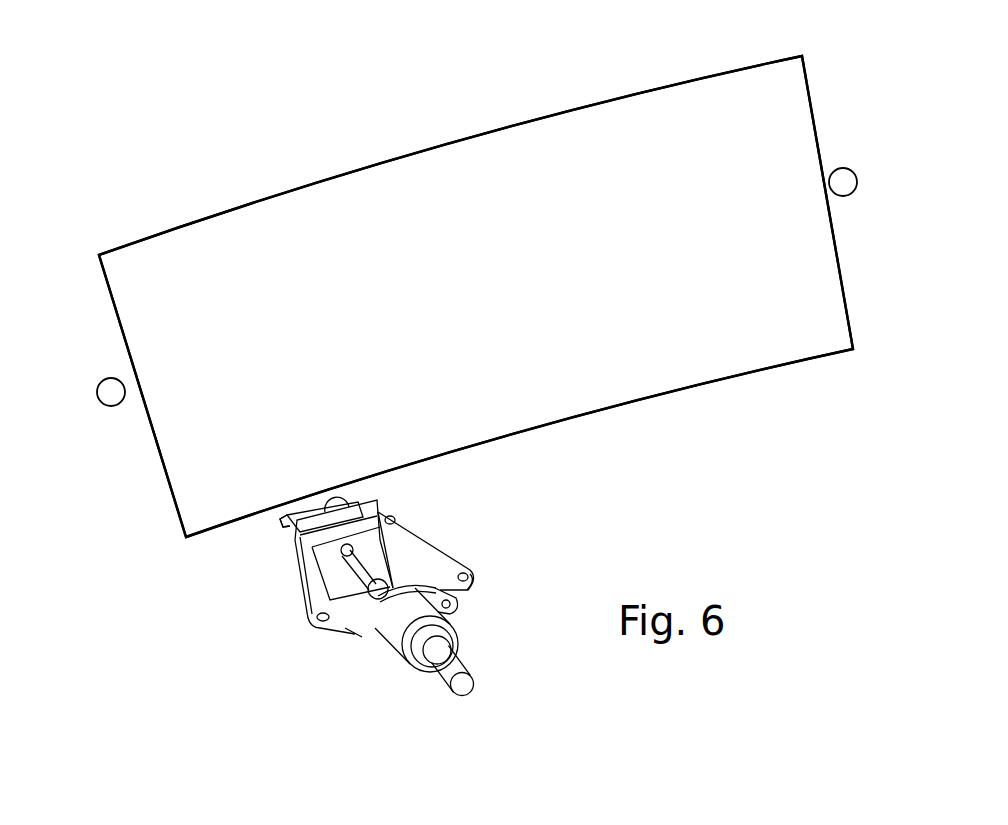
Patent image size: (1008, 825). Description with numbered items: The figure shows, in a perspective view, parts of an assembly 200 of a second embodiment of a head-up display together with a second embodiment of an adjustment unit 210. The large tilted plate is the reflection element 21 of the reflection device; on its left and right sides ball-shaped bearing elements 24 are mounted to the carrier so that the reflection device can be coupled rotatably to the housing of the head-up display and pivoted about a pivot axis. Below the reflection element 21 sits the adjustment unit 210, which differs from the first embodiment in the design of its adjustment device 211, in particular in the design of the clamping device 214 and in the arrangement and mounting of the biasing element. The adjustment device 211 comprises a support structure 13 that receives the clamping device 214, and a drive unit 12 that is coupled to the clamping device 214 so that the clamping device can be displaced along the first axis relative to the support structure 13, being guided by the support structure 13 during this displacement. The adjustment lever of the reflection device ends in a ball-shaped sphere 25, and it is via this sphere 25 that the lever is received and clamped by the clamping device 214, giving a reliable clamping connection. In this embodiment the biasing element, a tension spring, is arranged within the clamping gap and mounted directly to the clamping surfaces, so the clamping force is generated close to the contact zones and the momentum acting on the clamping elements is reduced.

The assembly 200 is at (213, 182).
The reflection element 21 is at (546, 259).
The ball-shaped bearing elements 24 is at (102, 373).
The adjustment unit 210 is at (381, 617).
The adjustment device 211 is at (465, 540).
The clamping device 214 is at (287, 532).
The support structure 13 is at (320, 600).
The drive unit 12 is at (428, 608).
The sphere 25 is at (345, 510).